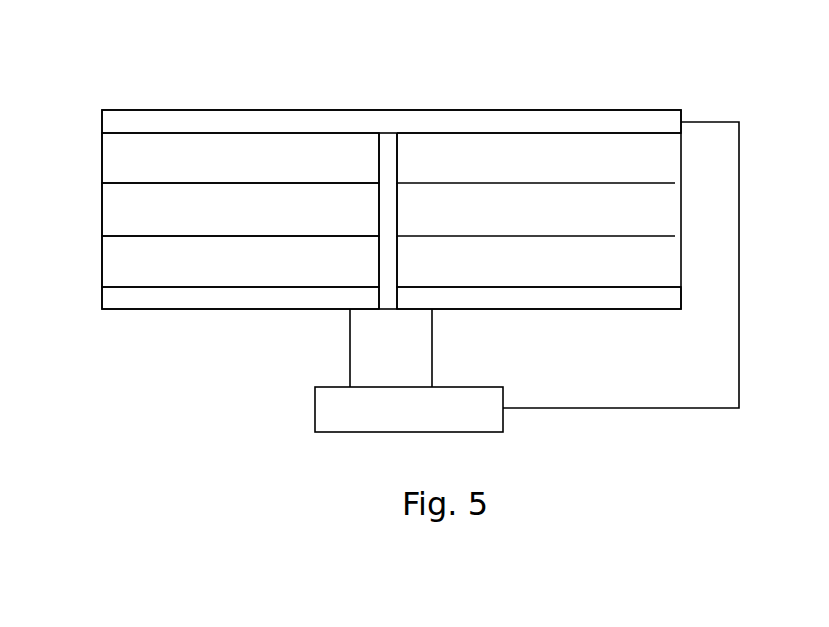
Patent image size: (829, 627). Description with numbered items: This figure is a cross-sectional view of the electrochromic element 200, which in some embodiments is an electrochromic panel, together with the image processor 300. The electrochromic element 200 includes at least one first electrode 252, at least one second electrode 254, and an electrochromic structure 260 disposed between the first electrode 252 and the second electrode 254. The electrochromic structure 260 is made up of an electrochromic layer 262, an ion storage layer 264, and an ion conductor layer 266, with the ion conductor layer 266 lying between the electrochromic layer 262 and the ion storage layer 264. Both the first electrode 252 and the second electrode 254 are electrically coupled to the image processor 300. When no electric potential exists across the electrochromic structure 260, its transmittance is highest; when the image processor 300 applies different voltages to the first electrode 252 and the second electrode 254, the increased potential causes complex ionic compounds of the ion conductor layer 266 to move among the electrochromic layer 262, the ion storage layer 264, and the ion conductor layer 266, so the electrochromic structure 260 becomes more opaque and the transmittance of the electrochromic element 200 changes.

The electrochromic element 200 is at (163, 62).
The first electrode 252 is at (332, 125).
The second electrode 254 is at (235, 295).
The electrochromic structure 260 is at (95, 133).
The electrochromic layer 262 is at (391, 261).
The ion storage layer 264 is at (391, 158).
The ion conductor layer 266 is at (388, 209).
The image processor 300 is at (338, 407).